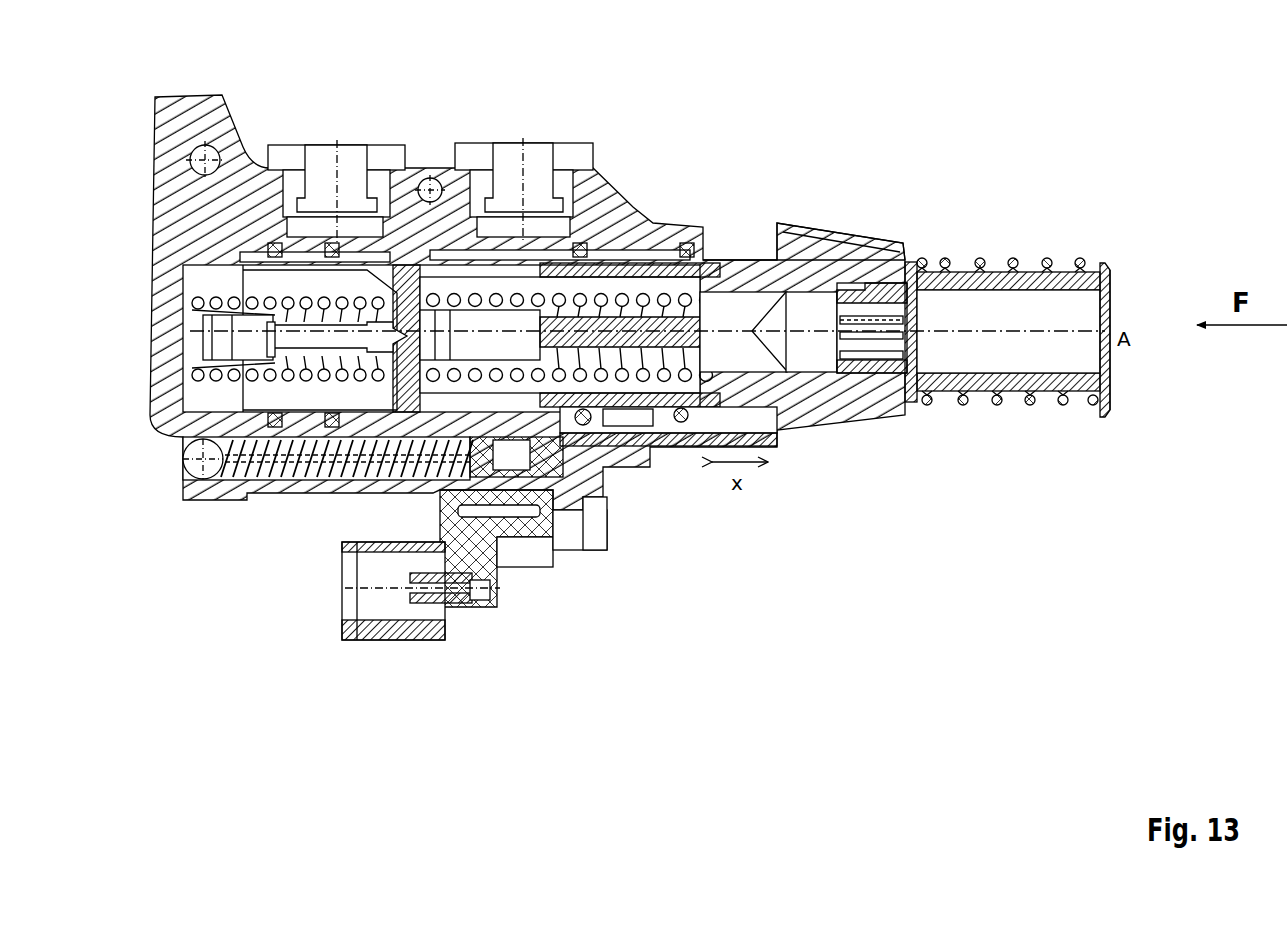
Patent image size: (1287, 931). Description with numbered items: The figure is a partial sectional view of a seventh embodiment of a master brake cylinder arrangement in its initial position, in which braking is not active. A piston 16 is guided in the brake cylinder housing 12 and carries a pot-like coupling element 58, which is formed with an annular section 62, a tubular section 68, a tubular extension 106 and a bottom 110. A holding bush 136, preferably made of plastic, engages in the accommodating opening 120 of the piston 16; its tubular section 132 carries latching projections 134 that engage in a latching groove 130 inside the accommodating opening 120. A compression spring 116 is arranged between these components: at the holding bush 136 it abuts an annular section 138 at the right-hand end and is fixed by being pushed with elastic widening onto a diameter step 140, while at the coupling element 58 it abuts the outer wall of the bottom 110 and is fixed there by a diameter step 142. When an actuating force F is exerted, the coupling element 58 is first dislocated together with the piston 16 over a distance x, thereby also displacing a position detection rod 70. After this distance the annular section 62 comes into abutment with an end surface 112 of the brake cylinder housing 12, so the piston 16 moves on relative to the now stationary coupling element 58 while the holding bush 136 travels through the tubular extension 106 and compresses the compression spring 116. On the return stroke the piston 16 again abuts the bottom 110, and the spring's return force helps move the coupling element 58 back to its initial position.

The brake cylinder housing 12 is at (641, 158).
The piston 16 is at (895, 390).
The coupling element 58 is at (820, 463).
The annular section 62 is at (777, 227).
The tubular section 68 is at (848, 228).
The position detection rod 70 is at (653, 447).
The tubular extension 106 is at (953, 228).
The bottom 110 is at (905, 228).
The end surface 112 is at (702, 230).
The compression spring 116 is at (1015, 228).
The accommodating opening 120 is at (823, 357).
The latching groove 130 is at (848, 378).
The tubular section 132 is at (993, 228).
The latching projections 134 is at (860, 378).
The holding bush 136 is at (1084, 433).
The annular section 138 is at (1108, 228).
The diameter step 140 is at (1092, 228).
The diameter step 142 is at (923, 228).